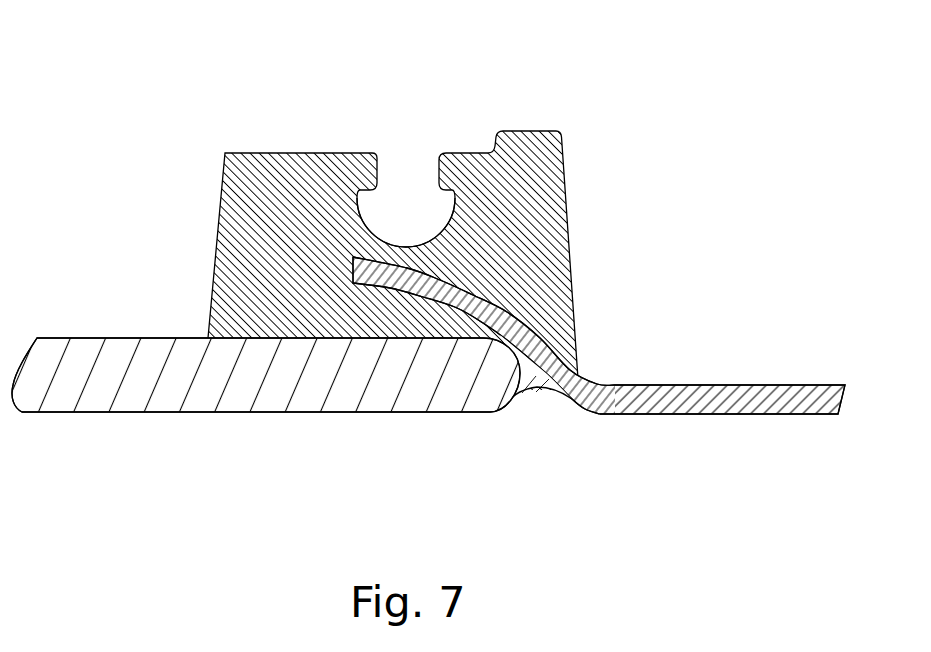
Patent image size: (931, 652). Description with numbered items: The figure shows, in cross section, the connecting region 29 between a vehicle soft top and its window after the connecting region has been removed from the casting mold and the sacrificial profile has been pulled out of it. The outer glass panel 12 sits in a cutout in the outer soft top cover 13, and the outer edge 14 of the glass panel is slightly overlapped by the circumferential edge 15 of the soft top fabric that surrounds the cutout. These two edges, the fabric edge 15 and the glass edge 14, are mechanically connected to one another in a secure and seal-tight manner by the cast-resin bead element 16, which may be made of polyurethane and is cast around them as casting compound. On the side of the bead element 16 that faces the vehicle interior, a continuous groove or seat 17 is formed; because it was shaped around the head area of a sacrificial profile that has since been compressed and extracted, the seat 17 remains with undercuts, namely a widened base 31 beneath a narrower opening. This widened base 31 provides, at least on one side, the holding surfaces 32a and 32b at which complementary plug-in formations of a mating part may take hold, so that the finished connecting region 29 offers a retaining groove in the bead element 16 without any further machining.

The outer glass panel 12 is at (107, 387).
The outer soft top cover 13 is at (740, 385).
The outer edge of the glass panel 14 is at (460, 388).
The circumferential edge of the outer soft top fabric 15 is at (453, 288).
The cast-resin bead element 16 is at (257, 238).
The groove or seat 17 is at (425, 213).
The connecting region 29 is at (428, 266).
The widened base 31 is at (397, 233).
The holding surface 32a is at (447, 198).
The holding surface 32b is at (359, 196).